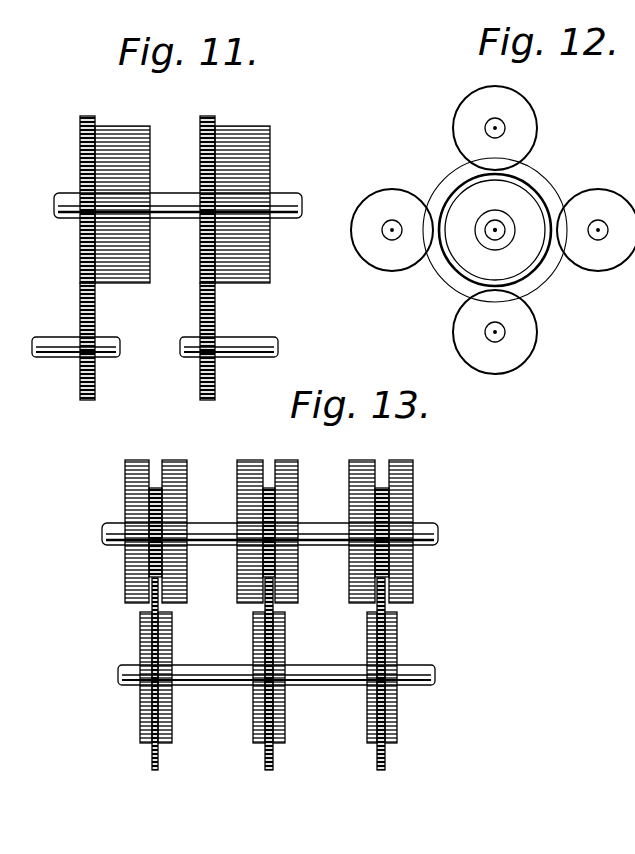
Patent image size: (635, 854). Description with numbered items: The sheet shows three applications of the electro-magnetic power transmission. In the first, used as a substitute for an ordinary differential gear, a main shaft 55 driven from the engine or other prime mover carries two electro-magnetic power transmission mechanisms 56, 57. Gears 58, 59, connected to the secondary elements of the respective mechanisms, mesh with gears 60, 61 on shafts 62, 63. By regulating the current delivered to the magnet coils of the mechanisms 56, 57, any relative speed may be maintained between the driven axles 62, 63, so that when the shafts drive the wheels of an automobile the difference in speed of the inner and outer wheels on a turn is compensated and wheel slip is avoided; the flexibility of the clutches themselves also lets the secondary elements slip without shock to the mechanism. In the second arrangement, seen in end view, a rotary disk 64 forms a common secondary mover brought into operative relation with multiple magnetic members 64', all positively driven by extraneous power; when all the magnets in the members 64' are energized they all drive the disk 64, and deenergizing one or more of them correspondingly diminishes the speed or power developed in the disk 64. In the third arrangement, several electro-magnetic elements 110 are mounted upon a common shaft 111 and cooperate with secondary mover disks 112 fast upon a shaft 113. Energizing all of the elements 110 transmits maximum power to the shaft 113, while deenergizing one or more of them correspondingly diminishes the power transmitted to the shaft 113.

In FIG. 11, the main shaft 55 is at (293, 194).
In FIG. 11, the electro-magnetic power transmission mechanism 56 is at (128, 126).
In FIG. 11, the electro-magnetic power transmission mechanism 57 is at (257, 126).
In FIG. 11, the gear 58 is at (79, 274).
In FIG. 11, the gear 59 is at (199, 274).
In FIG. 11, the gear 60 is at (79, 390).
In FIG. 11, the gear 61 is at (199, 390).
In FIG. 11, the shaft 62 is at (114, 337).
In FIG. 11, the shaft 63 is at (265, 337).
In FIG. 12, the rotary disk 64 is at (504, 227).
In FIG. 12, the magnetic members 64' is at (490, 230).
In FIG. 13, the electro-magnetic elements 110 is at (348, 470).
In FIG. 13, the common shaft 111 is at (472, 516).
In FIG. 13, the secondary mover disks 112 is at (384, 770).
In FIG. 13, the shaft 113 is at (468, 656).